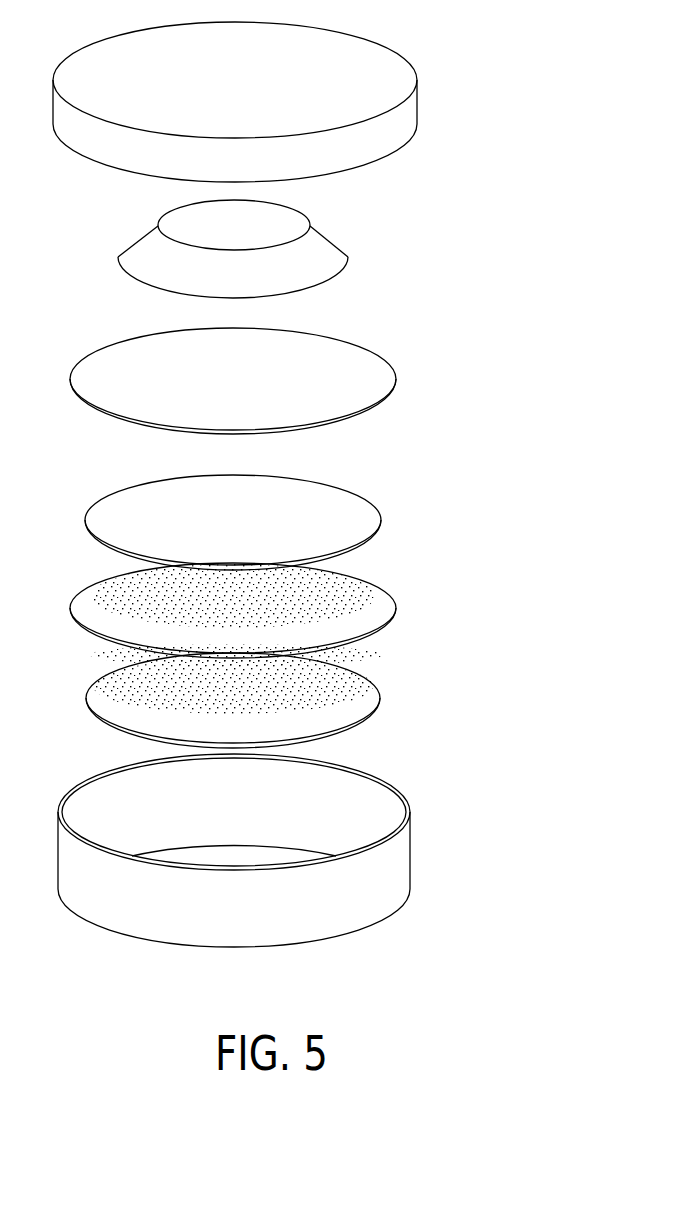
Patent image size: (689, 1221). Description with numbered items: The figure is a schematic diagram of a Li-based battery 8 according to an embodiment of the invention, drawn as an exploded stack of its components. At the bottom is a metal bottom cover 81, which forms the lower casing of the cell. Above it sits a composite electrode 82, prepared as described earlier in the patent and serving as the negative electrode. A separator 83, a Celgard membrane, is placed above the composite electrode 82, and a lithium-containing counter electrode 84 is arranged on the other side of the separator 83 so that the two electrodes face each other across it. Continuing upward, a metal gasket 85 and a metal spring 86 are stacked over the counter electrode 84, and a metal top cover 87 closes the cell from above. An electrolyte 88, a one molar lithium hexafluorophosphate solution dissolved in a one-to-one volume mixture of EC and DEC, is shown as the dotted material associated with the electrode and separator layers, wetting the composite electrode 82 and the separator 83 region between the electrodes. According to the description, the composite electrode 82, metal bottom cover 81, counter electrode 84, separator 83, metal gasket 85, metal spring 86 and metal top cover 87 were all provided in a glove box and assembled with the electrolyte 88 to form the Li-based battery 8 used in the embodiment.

The Li-based battery 8 is at (476, 58).
The metal bottom cover 81 is at (402, 858).
The composite electrode 82 is at (378, 694).
The separator 83 is at (383, 602).
The lithium-containing counter electrode 84 is at (382, 523).
The metal gasket 85 is at (390, 382).
The metal spring 86 is at (341, 250).
The metal top cover 87 is at (409, 110).
The electrolyte 88 is at (365, 657).